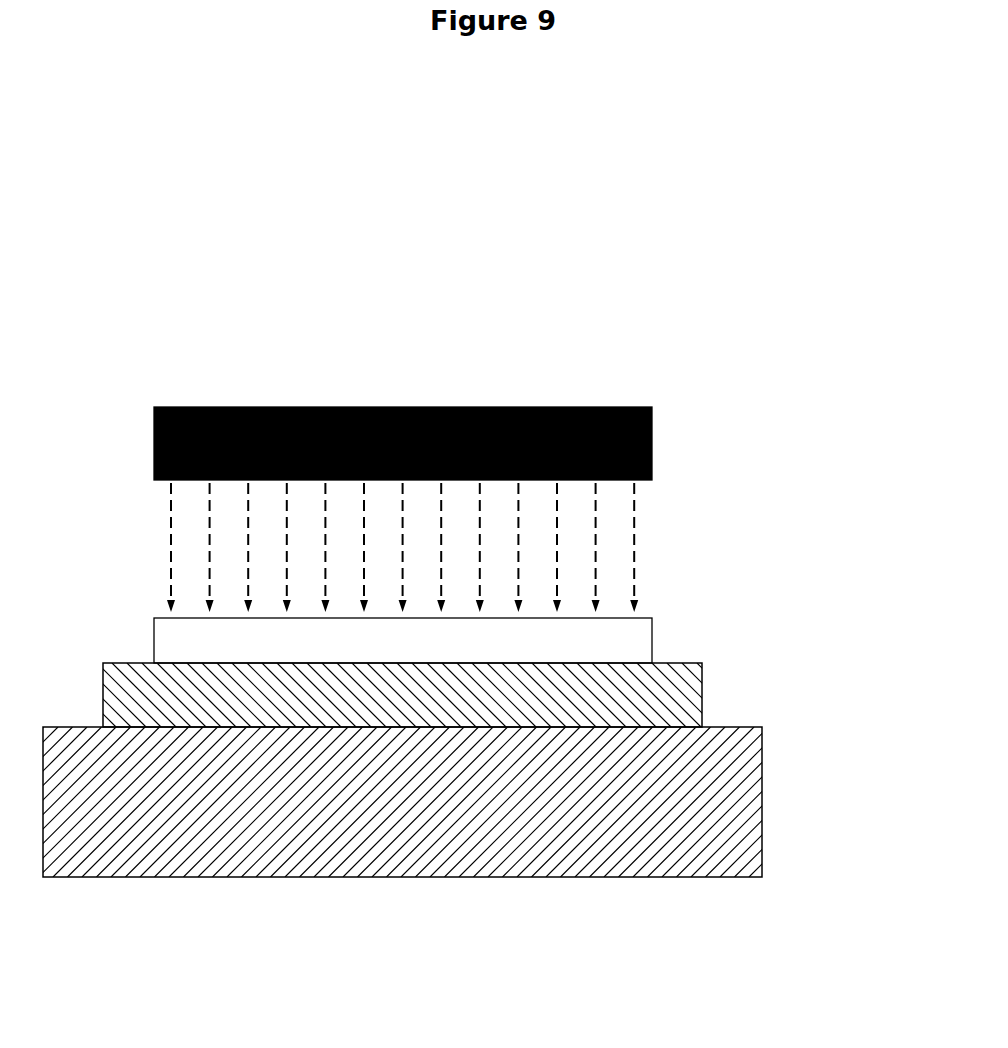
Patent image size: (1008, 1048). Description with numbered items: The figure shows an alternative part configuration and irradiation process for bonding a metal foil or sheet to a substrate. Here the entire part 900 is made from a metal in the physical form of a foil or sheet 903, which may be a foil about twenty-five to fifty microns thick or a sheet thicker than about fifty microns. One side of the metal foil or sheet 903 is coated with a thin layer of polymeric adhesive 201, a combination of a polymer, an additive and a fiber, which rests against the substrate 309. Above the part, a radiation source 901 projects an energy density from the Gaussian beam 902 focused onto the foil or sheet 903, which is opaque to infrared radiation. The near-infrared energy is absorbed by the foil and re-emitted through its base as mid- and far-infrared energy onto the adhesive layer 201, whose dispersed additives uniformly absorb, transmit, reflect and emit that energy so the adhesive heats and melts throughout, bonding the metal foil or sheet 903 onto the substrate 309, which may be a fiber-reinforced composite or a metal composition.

The part 900 is at (267, 362).
The radiation source 901 is at (655, 442).
The Gaussian beam 902 is at (642, 527).
The metal foil or sheet 903 is at (655, 627).
The adhesive layer 201 is at (705, 683).
The substrate 309 is at (765, 833).